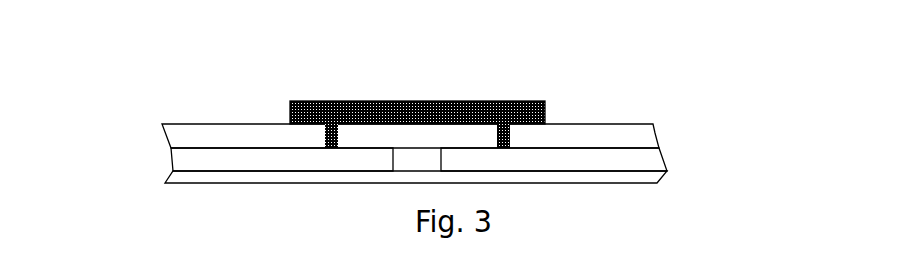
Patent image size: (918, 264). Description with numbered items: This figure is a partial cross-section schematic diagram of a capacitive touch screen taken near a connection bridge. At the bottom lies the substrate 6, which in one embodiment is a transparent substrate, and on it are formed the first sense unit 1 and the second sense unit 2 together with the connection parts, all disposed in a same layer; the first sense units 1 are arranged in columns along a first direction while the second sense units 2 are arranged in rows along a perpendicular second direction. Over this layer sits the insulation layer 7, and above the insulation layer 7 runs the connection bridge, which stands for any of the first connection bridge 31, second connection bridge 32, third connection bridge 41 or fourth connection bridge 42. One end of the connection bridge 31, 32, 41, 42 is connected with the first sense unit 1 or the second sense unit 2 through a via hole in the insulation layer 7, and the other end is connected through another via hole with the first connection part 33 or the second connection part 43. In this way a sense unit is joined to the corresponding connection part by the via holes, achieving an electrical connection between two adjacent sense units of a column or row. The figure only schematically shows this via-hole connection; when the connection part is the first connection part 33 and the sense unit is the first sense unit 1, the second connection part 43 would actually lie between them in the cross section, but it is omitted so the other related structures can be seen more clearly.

The first sense unit 1 is at (197, 147).
The second sense unit 2 is at (232, 124).
The substrate 6 is at (172, 178).
The insulation layer 7 is at (653, 130).
The first connection bridge 31 is at (502, 100).
The second connection bridge 32 is at (551, 94).
The third connection bridge 41 is at (551, 94).
The fourth connection bridge 42 is at (551, 94).
The first connection part 33 is at (667, 158).
The second connection part 43 is at (659, 142).